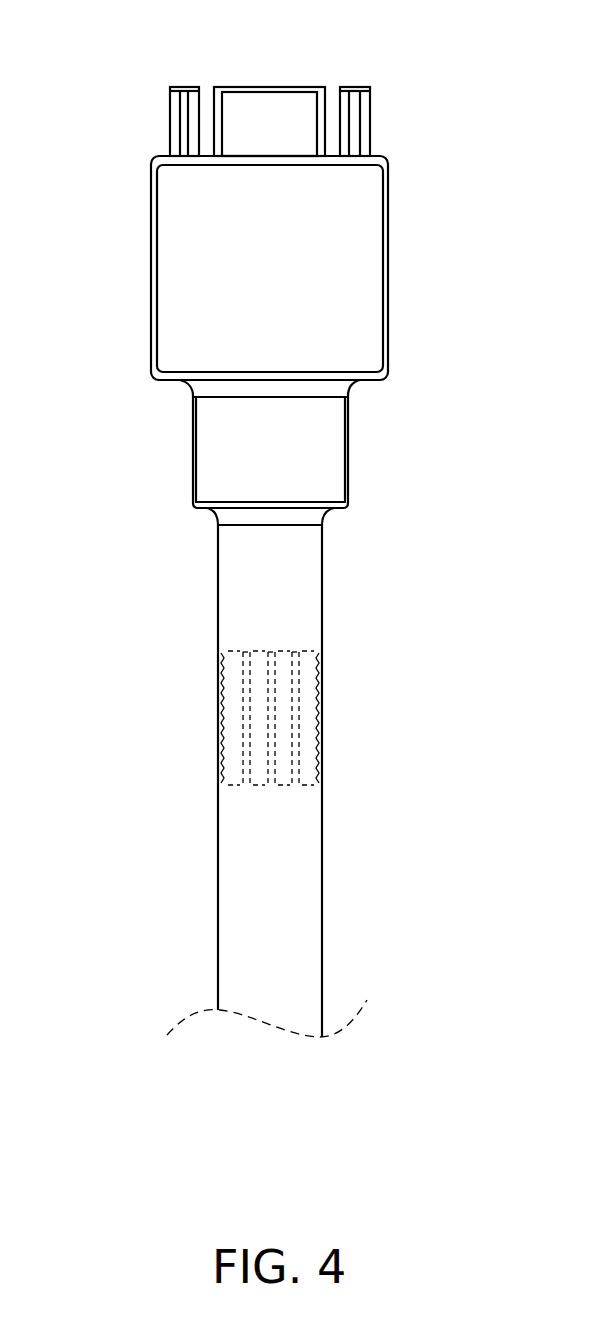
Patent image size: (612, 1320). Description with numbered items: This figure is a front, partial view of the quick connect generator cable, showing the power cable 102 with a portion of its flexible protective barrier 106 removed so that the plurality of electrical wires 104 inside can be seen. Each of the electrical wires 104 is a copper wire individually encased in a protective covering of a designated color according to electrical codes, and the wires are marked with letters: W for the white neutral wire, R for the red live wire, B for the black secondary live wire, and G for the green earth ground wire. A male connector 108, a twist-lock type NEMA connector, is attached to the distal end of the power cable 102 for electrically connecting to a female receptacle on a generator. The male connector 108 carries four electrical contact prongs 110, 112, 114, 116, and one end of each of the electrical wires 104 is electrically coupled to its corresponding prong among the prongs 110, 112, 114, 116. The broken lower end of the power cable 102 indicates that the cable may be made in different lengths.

The power cable 102 is at (322, 885).
The electrical wires 104 is at (327, 650).
The protective barrier 106 is at (232, 942).
The male connector 108 is at (377, 245).
The electrical contact prong 110 is at (300, 95).
The electrical contact prong 112 is at (370, 95).
The electrical contact prong 114 is at (168, 102).
The electrical contact prong 116 is at (258, 86).